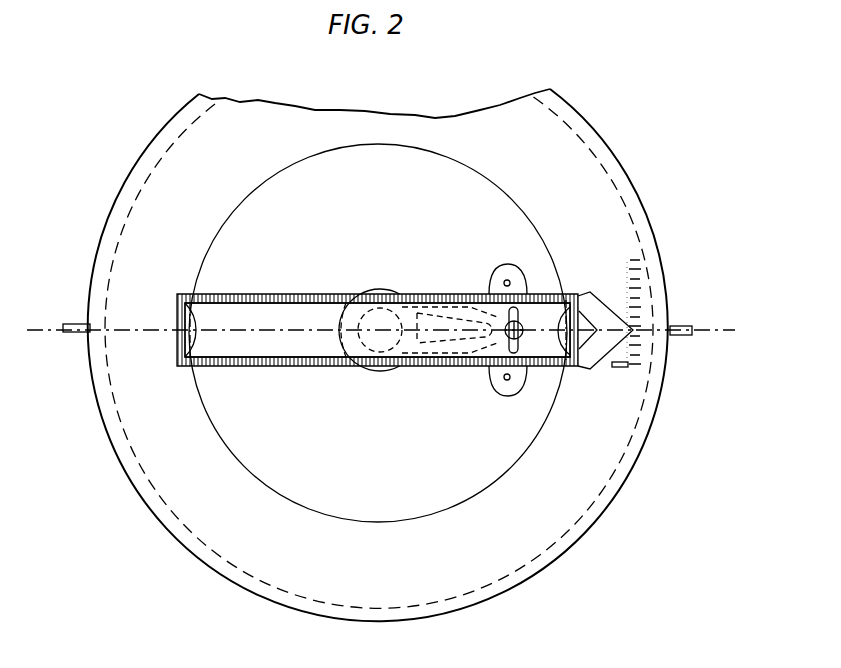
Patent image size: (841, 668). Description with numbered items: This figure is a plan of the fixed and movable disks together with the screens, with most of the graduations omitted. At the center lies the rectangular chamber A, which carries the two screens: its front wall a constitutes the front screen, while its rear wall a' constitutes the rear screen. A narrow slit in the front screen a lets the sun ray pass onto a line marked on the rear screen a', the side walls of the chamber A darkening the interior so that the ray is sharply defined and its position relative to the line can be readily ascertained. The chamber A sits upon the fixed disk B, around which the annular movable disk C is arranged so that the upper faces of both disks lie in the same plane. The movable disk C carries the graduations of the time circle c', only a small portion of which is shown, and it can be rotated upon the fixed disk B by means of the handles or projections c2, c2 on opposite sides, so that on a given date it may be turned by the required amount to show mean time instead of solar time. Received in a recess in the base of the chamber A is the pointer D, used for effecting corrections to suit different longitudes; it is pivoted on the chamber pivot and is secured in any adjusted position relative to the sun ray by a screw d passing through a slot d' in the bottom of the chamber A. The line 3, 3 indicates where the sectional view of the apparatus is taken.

The chamber A is at (377, 330).
The fixed disk B is at (378, 333).
The movable disk C is at (378, 355).
The pointer D is at (612, 367).
The front wall a is at (617, 312).
The rear wall a' is at (167, 349).
The graduations of the time circle c' is at (405, 352).
The handles or projections c2 is at (80, 331).
The screw d is at (480, 366).
The slot d' is at (491, 328).
The section line 3 3 is at (379, 331).